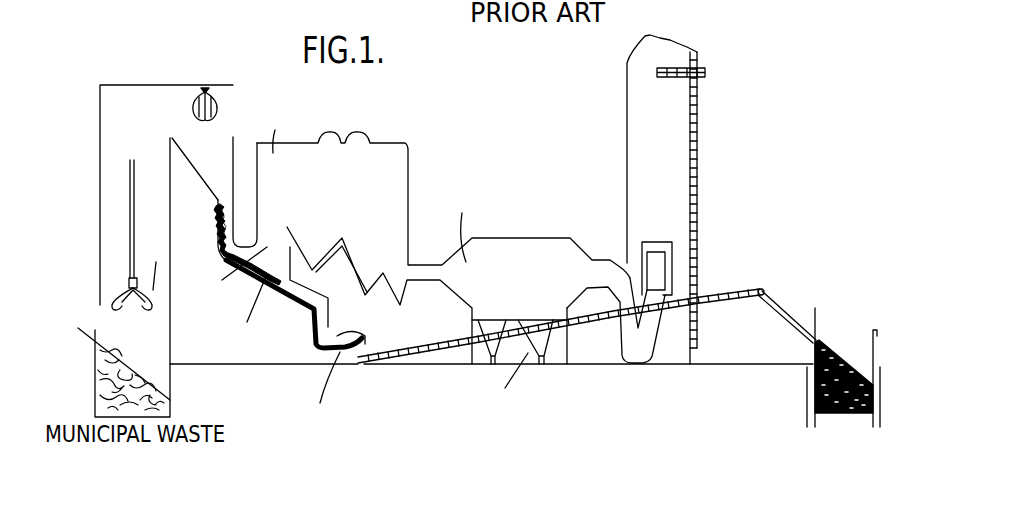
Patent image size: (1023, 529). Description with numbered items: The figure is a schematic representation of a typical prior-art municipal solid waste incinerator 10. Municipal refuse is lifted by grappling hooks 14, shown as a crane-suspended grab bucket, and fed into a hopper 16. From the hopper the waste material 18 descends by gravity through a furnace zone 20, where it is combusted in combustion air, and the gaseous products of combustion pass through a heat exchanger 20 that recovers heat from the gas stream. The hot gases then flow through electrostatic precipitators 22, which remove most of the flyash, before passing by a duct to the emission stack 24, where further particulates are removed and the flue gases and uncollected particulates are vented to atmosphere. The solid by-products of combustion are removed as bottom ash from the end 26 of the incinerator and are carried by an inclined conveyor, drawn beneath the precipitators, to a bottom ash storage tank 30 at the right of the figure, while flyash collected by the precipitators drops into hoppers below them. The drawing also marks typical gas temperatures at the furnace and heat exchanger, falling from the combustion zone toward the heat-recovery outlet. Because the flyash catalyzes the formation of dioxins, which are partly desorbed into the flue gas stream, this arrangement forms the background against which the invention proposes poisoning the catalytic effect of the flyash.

The municipal solid waste incinerator 10 is at (524, 101).
The grappling hooks 14 is at (192, 114).
The hopper 16 is at (204, 183).
The waste material 18 is at (217, 238).
The furnace zone and heat exchanger 20 is at (408, 150).
The electrostatic precipitators 22 is at (518, 256).
The emission stack 24 is at (627, 130).
The end of the incinerator 26 is at (317, 352).
The bottom ash storage tank 30 is at (823, 413).